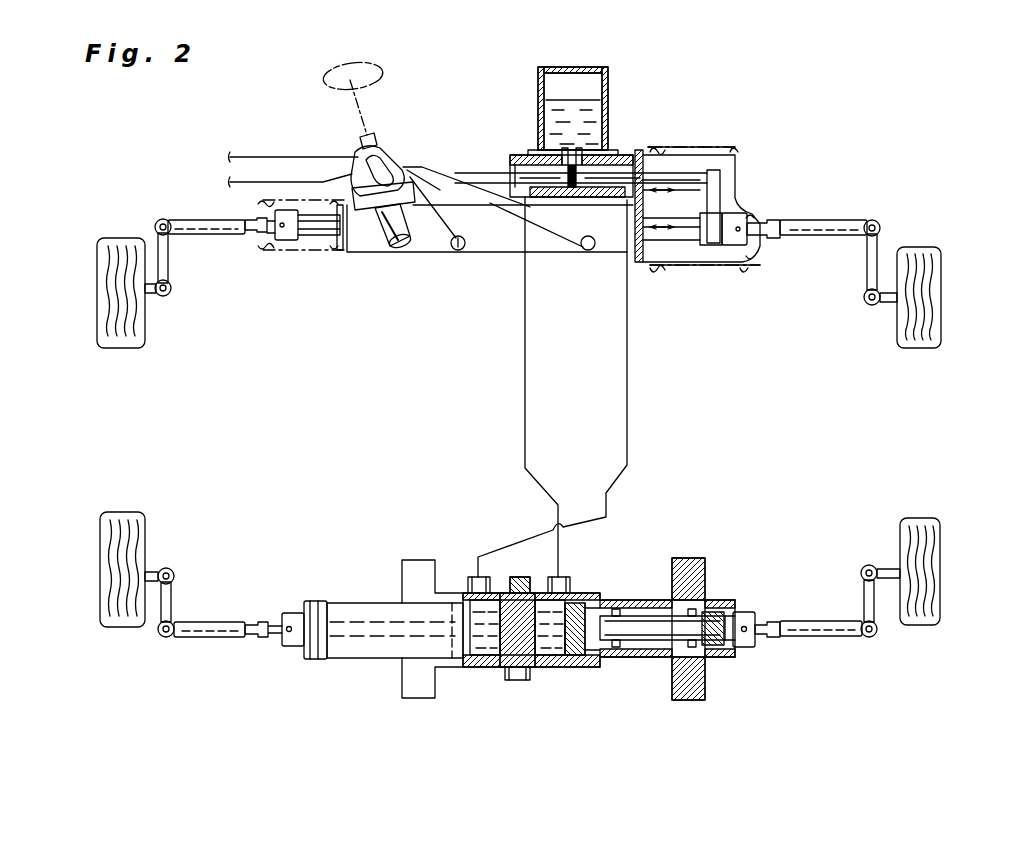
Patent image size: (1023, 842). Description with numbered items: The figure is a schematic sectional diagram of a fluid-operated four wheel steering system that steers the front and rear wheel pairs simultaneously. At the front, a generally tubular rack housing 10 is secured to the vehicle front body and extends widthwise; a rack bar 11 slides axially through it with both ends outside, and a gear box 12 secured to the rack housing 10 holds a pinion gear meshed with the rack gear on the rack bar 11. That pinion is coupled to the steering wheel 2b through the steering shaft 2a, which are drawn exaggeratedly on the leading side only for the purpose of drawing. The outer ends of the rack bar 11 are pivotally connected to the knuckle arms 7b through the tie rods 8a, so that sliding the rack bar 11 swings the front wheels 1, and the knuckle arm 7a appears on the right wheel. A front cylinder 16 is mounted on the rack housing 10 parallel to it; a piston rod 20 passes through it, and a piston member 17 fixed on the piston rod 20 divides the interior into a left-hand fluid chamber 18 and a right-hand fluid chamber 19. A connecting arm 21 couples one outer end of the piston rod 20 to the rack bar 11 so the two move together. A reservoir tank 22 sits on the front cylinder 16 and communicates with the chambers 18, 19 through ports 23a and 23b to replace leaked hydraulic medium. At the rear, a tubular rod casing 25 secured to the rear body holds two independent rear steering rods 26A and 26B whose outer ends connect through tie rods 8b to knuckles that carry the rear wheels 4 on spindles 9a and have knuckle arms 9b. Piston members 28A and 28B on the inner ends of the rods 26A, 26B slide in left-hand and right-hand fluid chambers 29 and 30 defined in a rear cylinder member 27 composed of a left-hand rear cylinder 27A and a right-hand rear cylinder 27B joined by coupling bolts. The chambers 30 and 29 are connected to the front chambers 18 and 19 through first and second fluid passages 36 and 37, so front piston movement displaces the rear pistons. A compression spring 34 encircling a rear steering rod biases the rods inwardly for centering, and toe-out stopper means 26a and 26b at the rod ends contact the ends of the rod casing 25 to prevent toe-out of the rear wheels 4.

The front wheel 1 is at (96, 286).
The steering shaft 2a is at (355, 120).
The steering wheel 2b is at (370, 84).
The rear wheel 4 is at (98, 577).
The front knuckle arm 7a is at (885, 302).
The knuckle arm 7b is at (168, 260).
The tie rod 8a is at (195, 220).
The tie rod 8b is at (207, 633).
The spindle 9a is at (150, 572).
The knuckle arm 9b is at (172, 600).
The rack housing 10 is at (490, 258).
The rack bar 11 is at (300, 244).
The gear box 12 is at (370, 246).
The front cylinder 16 is at (644, 158).
The piston member 17 is at (573, 197).
The left-hand fluid chamber 18 is at (512, 158).
The right-hand fluid chamber 19 is at (690, 155).
The piston rod 20 is at (716, 195).
The connecting arm 21 is at (745, 215).
The reservoir tank 22 is at (607, 90).
The port 23a is at (530, 152).
The port 23b is at (628, 152).
The rod casing 25 is at (590, 600).
The left-hand rear steering rod 26A is at (367, 640).
The right-hand rear steering rod 26B is at (647, 633).
The toe-out stopper means 26a is at (292, 650).
The toe-out stopper means 26b is at (752, 650).
The rear cylinder member 27 is at (557, 712).
The left-hand rear cylinder 27A is at (497, 688).
The right-hand rear cylinder 27B is at (553, 696).
The piston member 28A is at (479, 623).
The piston member 28B is at (583, 625).
The left-hand fluid chamber 29 is at (475, 634).
The right-hand fluid chamber 30 is at (573, 637).
The compression spring 34 is at (705, 655).
The first fluid passage 36 is at (524, 388).
The second fluid passage 37 is at (628, 388).